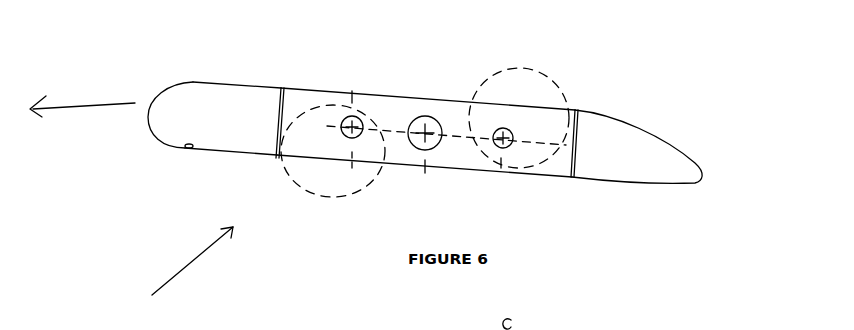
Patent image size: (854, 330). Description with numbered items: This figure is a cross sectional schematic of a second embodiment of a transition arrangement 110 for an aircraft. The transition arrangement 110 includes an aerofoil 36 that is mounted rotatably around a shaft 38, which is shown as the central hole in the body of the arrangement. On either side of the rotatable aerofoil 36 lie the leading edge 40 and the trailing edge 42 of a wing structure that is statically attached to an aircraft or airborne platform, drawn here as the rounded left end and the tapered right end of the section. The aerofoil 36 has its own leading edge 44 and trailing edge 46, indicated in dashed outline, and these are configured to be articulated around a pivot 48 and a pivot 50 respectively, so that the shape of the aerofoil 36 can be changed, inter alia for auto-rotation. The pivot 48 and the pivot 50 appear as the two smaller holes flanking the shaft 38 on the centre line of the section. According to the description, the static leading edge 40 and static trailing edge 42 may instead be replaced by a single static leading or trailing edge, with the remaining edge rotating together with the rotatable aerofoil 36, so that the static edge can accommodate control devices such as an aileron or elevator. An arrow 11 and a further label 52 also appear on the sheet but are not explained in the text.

The section line / viewing direction arrow 11 is at (82, 95).
The transition arrangement 110 is at (185, 278).
The aerofoil 36 is at (423, 98).
The shaft 38 is at (437, 144).
The leading edge 40 is at (182, 149).
The trailing edge 42 is at (667, 178).
The leading edge 44 is at (334, 107).
The trailing edge 46 is at (552, 72).
The pivot 48 is at (358, 118).
The pivot 50 is at (512, 146).
The connector element 52 is at (543, 329).